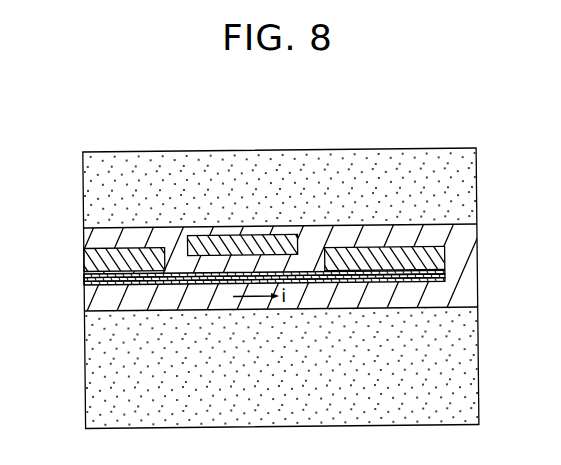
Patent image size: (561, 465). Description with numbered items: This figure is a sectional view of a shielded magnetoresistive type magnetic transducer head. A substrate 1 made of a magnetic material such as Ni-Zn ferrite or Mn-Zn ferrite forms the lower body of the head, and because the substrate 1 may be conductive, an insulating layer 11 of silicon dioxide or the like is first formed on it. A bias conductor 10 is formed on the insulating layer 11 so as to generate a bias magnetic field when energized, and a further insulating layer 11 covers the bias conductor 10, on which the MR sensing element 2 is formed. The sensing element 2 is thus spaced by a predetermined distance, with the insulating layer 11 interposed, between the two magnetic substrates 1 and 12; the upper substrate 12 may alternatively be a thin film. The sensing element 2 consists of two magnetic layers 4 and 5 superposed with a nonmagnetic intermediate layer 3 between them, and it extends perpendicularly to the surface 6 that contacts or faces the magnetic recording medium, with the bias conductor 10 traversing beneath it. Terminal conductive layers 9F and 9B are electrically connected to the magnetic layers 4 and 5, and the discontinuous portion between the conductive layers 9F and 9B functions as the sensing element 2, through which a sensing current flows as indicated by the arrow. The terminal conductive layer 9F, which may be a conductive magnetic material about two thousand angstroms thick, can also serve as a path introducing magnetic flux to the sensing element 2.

The substrate 1 is at (480, 396).
The magnetic substrate 12 is at (476, 212).
The insulating layer 11 is at (441, 304).
The terminal conductive layer 9F is at (108, 253).
The terminal conductive layer 9B is at (445, 259).
The bias conductor 10 is at (238, 228).
The MR sensing element 2 is at (264, 178).
The magnetic layer 5 is at (268, 273).
The nonmagnetic intermediate layer 3 is at (275, 277).
The magnetic layer 4 is at (285, 282).
The surface 6 is at (78, 280).